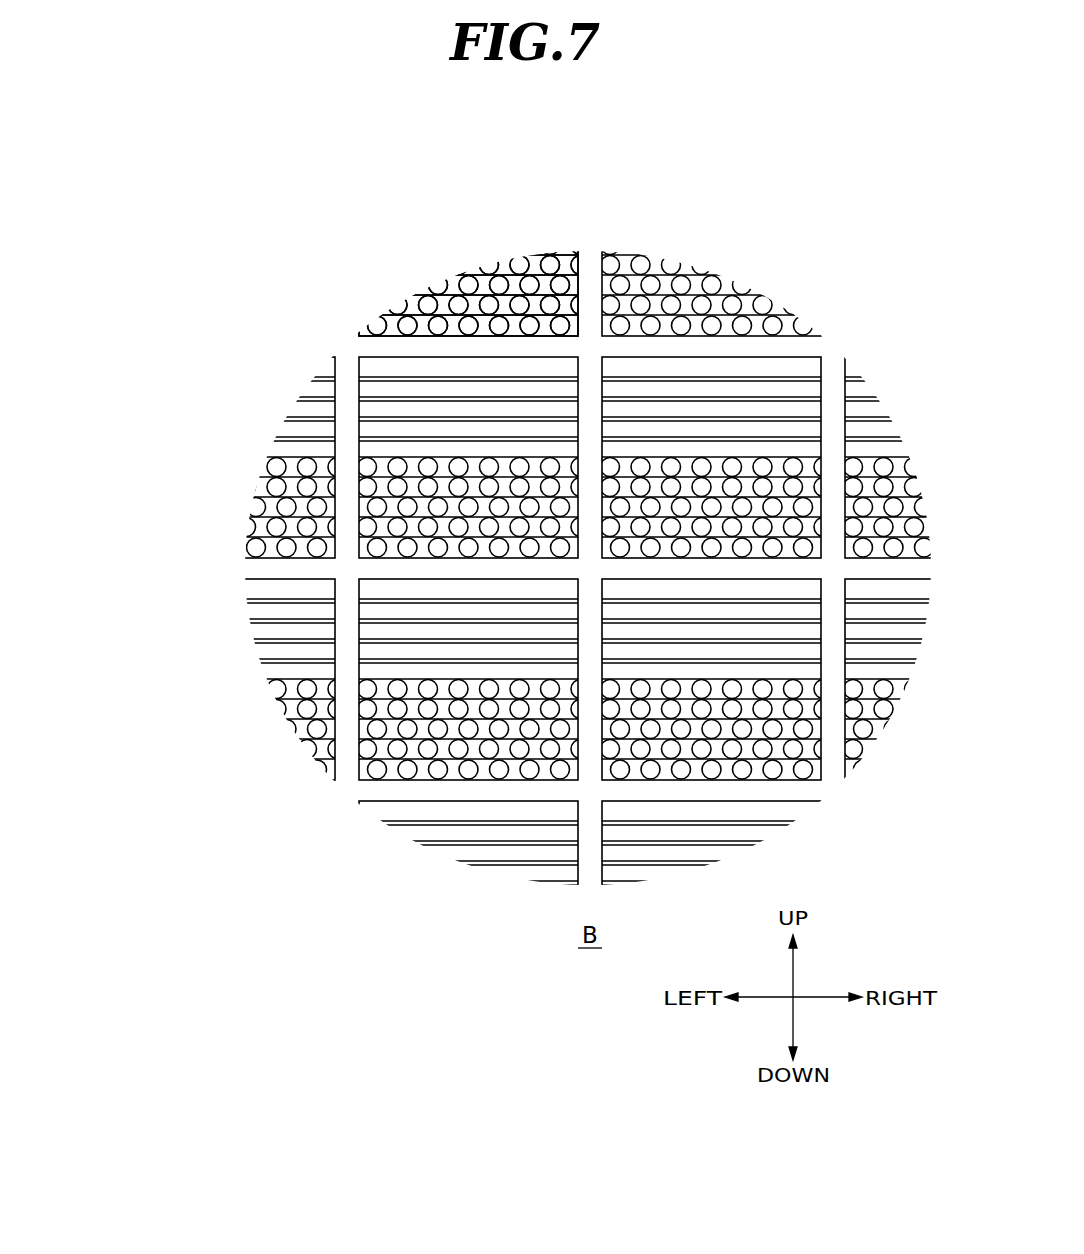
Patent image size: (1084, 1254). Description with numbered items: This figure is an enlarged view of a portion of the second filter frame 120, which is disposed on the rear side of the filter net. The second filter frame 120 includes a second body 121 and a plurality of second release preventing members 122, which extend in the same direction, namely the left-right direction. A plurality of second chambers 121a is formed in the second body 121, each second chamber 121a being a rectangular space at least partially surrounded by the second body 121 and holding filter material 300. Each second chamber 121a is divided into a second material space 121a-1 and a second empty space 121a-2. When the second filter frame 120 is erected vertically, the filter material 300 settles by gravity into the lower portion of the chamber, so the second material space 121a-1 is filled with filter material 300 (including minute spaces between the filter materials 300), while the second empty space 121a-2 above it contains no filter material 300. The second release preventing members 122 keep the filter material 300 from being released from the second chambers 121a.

The second filter frame 120 is at (568, 568).
The second body 121 is at (362, 347).
The second release preventing member 122 is at (378, 396).
The second chamber 121a is at (325, 679).
The second material space 121a-1 is at (385, 752).
The second empty space 121a-2 is at (386, 651).
The filter material 300 is at (250, 545).